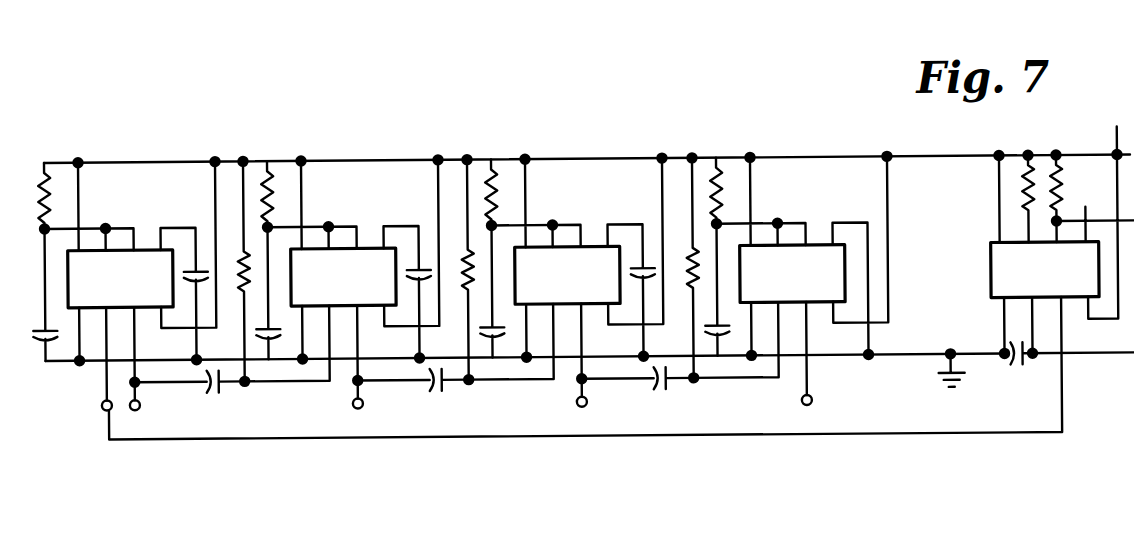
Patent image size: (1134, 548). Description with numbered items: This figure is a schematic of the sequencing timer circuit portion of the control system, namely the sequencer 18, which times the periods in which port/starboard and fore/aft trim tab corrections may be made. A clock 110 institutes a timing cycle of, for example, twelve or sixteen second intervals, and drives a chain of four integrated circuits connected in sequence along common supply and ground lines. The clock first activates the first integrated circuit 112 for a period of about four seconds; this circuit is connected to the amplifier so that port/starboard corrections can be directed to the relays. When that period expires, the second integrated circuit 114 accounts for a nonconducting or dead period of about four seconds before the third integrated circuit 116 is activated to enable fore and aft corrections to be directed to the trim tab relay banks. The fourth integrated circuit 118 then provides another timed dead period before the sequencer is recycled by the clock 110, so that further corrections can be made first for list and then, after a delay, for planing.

The sequencer 18 is at (723, 146).
The clock 110 is at (997, 250).
The integrated circuit IC-1 112 is at (148, 251).
The integrated circuit IC-2 114 is at (372, 251).
The integrated circuit IC-3 116 is at (598, 251).
The integrated circuit IC-4 118 is at (820, 251).